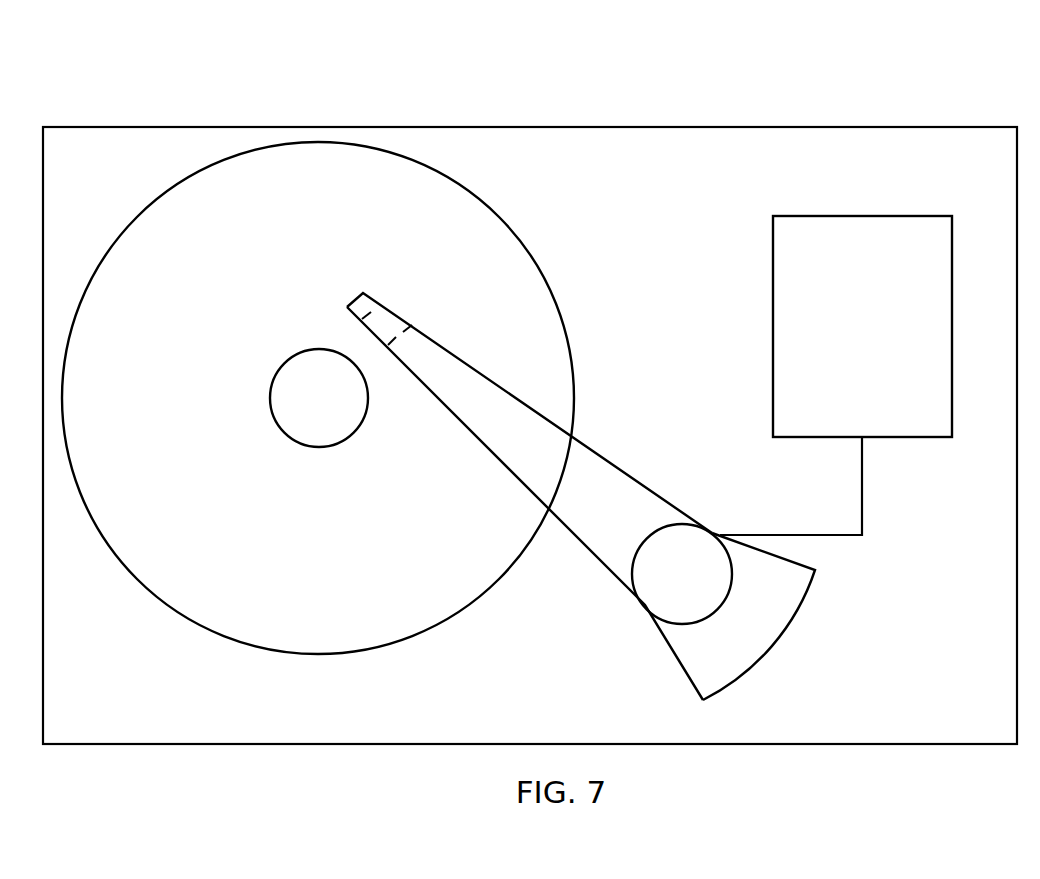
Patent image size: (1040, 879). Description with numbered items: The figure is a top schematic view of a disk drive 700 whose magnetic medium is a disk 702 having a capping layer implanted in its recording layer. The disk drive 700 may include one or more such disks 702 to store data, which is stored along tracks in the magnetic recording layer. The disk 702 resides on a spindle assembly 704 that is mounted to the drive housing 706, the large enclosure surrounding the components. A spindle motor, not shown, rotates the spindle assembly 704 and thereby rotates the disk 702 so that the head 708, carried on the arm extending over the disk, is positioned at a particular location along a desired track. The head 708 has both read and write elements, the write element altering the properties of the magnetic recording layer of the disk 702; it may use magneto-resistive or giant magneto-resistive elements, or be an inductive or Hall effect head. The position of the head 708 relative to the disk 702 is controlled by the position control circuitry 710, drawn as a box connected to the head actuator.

The disk drive 700 is at (703, 82).
The disk 702 is at (316, 655).
The spindle assembly 704 is at (343, 411).
The drive housing 706 is at (530, 127).
The head 708 is at (392, 312).
The position control circuitry 710 is at (838, 339).